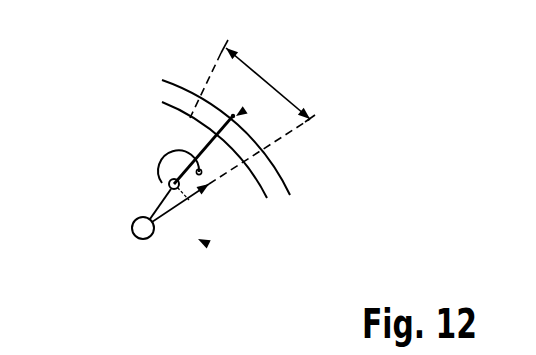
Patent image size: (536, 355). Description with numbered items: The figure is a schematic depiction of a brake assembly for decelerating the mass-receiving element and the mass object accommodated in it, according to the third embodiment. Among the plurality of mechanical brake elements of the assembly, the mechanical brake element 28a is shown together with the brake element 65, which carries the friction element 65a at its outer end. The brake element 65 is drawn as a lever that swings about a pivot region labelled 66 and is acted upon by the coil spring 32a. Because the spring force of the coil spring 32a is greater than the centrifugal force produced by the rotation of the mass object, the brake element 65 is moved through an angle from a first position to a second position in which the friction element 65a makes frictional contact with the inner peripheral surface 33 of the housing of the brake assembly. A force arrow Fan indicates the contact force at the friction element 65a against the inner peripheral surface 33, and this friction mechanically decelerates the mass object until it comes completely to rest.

The mechanical brake element 28a is at (208, 244).
The coil spring 32a is at (158, 170).
The inner peripheral surface 33 is at (257, 143).
The brake element 65 is at (205, 144).
The friction element 65a is at (232, 115).
The pivot axis / bearing of the lever 66 is at (132, 234).
The contact pressure force Fan is at (245, 110).